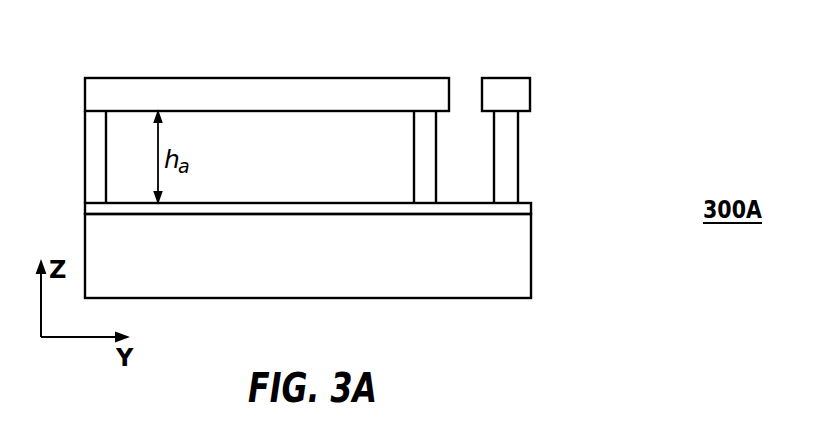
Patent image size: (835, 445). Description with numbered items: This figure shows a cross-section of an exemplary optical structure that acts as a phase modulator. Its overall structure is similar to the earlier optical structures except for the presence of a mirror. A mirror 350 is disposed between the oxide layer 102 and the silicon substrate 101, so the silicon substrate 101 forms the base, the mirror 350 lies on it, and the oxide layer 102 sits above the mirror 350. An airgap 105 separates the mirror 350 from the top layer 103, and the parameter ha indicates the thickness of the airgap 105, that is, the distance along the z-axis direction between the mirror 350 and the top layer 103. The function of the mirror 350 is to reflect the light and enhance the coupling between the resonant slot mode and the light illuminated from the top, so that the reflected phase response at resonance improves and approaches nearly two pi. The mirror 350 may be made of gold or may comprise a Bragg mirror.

The silicon substrate 101 is at (520, 243).
The mirror 350 is at (528, 207).
The airgap 105 is at (223, 137).
The oxide layer 102 is at (510, 143).
The top layer 103 is at (520, 95).